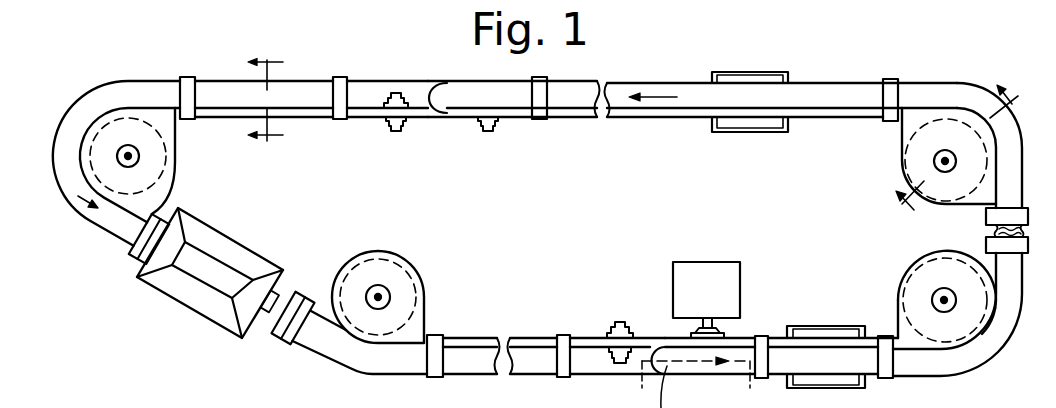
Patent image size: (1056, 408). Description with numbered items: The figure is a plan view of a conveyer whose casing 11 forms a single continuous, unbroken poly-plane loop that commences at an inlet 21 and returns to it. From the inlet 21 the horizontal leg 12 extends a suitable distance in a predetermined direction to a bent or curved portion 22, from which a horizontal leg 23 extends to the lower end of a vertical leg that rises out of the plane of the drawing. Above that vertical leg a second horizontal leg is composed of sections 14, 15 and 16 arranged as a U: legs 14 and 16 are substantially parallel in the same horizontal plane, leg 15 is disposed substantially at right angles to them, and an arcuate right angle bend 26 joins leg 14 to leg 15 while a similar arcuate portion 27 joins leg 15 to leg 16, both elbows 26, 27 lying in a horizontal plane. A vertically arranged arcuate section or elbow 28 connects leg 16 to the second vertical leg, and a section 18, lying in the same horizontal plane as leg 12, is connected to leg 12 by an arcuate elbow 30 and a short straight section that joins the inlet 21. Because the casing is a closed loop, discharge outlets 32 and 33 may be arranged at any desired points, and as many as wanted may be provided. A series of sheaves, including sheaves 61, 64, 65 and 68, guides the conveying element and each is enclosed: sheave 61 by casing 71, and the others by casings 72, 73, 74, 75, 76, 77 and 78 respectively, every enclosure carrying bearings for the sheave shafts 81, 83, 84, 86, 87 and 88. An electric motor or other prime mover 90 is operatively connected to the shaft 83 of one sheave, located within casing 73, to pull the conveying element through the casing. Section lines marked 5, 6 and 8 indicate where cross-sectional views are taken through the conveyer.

The section line 5- 5 is at (698, 377).
The section line 6- 6 is at (959, 149).
The section line 8- 8 is at (265, 99).
The casing 11 is at (311, 352).
The horizontal leg 12 is at (278, 326).
The section of second horizontal leg 14 is at (833, 357).
The section of second horizontal leg 15 is at (1019, 234).
The section of second horizontal leg 16 is at (836, 83).
The section of horizontal leg 18 is at (312, 87).
The inlet 21 is at (205, 303).
The bent or curved portion 22 is at (367, 374).
The horizontal leg 23 is at (535, 374).
The arcuate section or right angle bend 26 is at (991, 346).
The arcuate portion 27 is at (971, 96).
The arcuate section or elbow 28 is at (453, 101).
The arcuate section or elbow 30 is at (66, 133).
The discharge outlet 32 is at (826, 327).
The discharge outlet 33 is at (750, 132).
The sheave 61 is at (425, 316).
The sheave 64 is at (900, 324).
The sheave 65 is at (908, 134).
The sheave 68 is at (153, 204).
The casing 71 is at (384, 257).
The casing 72 is at (577, 340).
The casing 73 is at (742, 340).
The casing 74 is at (900, 278).
The casing 75 is at (902, 163).
The casing 76 is at (521, 113).
The casing 77 is at (365, 112).
The casing 78 is at (177, 137).
The shaft 81 is at (371, 294).
The shaft 83 is at (945, 170).
The shaft 84 is at (939, 291).
The shaft 86 is at (489, 132).
The shaft 87 is at (398, 133).
The shaft 88 is at (117, 157).
The electric motor or prime mover device 90 is at (717, 266).